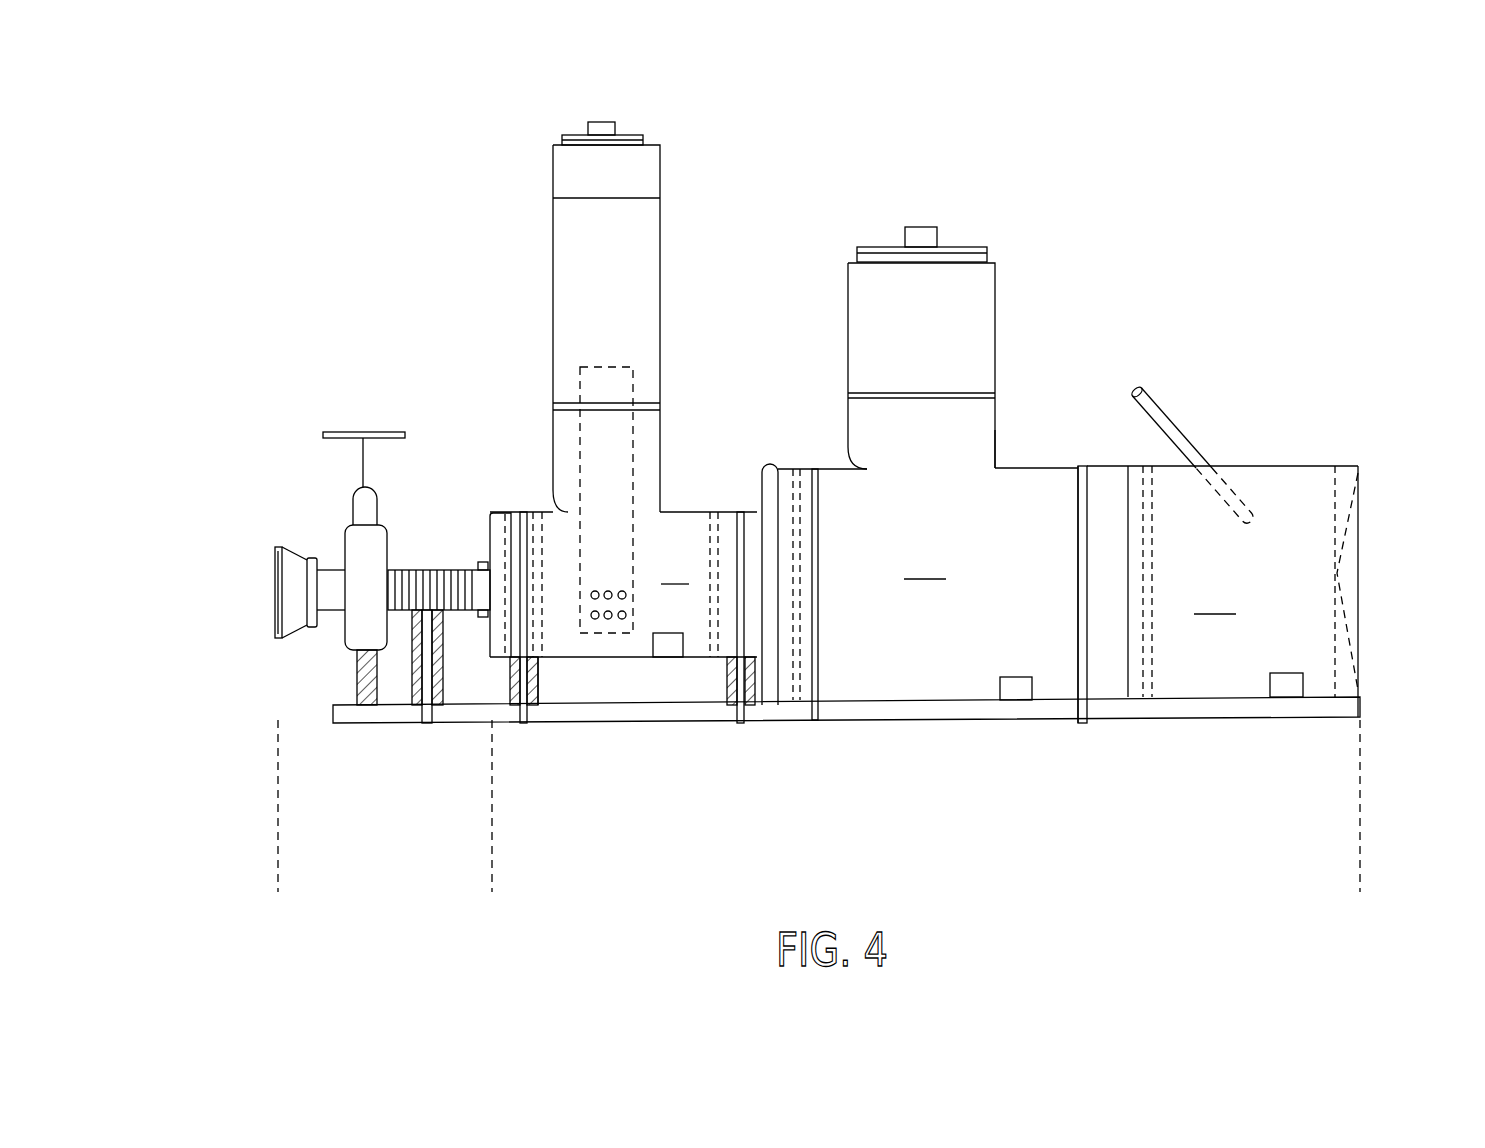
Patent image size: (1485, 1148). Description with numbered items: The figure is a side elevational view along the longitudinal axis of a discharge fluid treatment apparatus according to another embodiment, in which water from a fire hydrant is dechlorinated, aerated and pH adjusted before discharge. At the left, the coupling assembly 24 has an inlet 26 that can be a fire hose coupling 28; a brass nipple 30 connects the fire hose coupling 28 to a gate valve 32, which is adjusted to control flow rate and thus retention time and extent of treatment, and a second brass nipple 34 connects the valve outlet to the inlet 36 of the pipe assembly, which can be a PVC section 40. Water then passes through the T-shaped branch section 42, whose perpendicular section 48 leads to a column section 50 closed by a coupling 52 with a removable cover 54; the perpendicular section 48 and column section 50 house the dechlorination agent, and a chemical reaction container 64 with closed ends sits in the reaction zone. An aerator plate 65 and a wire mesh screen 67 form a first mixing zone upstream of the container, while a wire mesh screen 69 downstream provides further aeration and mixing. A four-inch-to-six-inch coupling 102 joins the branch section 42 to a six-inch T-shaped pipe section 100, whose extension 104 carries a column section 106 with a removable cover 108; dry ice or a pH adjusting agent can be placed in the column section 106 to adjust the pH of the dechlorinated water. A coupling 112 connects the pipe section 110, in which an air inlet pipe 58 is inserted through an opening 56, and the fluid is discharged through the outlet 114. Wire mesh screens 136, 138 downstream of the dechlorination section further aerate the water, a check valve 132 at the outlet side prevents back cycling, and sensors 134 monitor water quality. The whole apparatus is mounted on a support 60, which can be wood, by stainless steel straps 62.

The coupling assembly 24 is at (490, 857).
The inlet 26 is at (270, 585).
The fire hose coupling 28 is at (293, 622).
The brass nipple 30 is at (328, 567).
The gate valve 32 is at (378, 508).
The second brass nipple 34 is at (405, 575).
The inlet 36 is at (483, 558).
The PVC section 40 is at (497, 514).
The T-shaped branch section 42 is at (670, 339).
The perpendicular section 48 is at (660, 440).
The column section 50 is at (660, 255).
The coupling 52 is at (660, 182).
The removable cover 54 is at (617, 132).
The opening 56 is at (1207, 466).
The air inlet pipe 58 is at (1147, 398).
The support 60 is at (920, 710).
The straps 62 is at (427, 723).
The chemical reaction container 64 is at (600, 375).
The aerator plate 65 is at (508, 515).
The wire mesh screen 67 is at (540, 663).
The wire mesh screen 69 is at (713, 512).
The T-shaped pipe section 100 is at (928, 524).
The PVC coupling 102 is at (767, 464).
The extension 104 is at (998, 430).
The column section 106 is at (998, 293).
The removable cover 108 is at (990, 246).
The pipe section 110 is at (1005, 350).
The coupling 112 is at (1082, 466).
The outlet 114 is at (1352, 572).
The check valve 132 is at (1345, 466).
The sensors 134 is at (665, 647).
The wire mesh screen 136 is at (797, 470).
The wire mesh screen 138 is at (1152, 700).